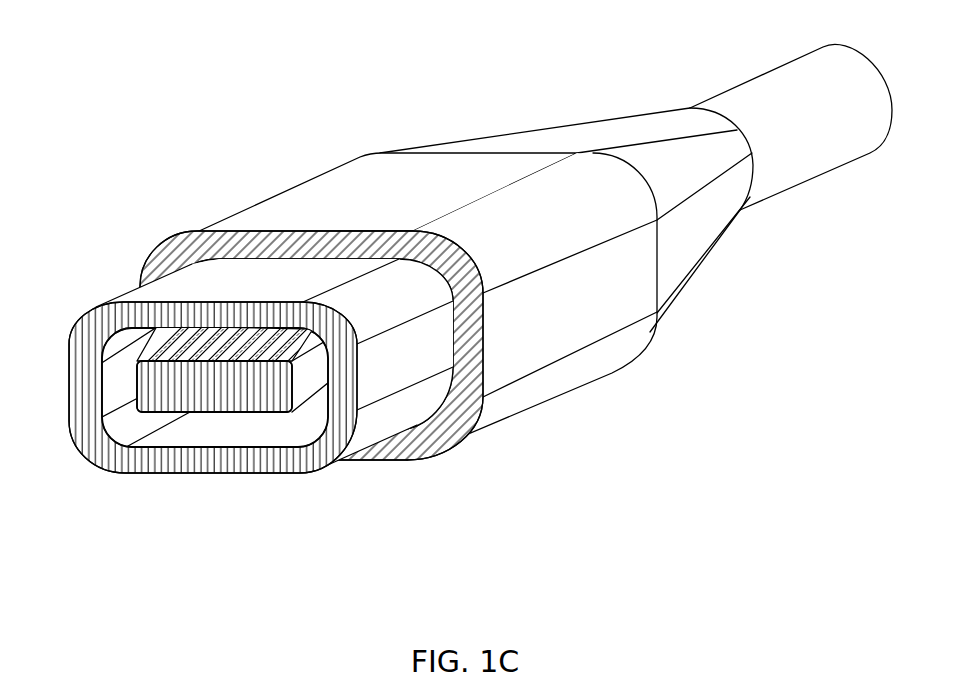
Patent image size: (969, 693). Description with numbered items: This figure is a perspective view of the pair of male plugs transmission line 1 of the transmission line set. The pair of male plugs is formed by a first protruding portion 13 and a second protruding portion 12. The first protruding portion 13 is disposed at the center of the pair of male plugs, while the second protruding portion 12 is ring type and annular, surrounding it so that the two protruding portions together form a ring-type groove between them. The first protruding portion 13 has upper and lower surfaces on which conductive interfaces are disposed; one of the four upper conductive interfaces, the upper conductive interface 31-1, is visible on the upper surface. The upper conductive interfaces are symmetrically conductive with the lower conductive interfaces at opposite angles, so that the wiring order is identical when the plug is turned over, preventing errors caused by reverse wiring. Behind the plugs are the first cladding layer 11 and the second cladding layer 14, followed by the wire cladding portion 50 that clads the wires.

The pair of male plugs transmission line 1 is at (459, 271).
The first cladding layer 11 is at (329, 190).
The second protruding portion 12 is at (312, 460).
The first protruding portion 13 is at (215, 400).
The second cladding layer 14 is at (613, 130).
The upper conductive interface 31-1 is at (167, 345).
The wire cladding portion 50 is at (763, 100).